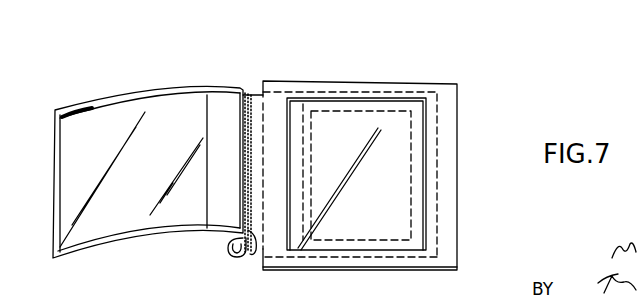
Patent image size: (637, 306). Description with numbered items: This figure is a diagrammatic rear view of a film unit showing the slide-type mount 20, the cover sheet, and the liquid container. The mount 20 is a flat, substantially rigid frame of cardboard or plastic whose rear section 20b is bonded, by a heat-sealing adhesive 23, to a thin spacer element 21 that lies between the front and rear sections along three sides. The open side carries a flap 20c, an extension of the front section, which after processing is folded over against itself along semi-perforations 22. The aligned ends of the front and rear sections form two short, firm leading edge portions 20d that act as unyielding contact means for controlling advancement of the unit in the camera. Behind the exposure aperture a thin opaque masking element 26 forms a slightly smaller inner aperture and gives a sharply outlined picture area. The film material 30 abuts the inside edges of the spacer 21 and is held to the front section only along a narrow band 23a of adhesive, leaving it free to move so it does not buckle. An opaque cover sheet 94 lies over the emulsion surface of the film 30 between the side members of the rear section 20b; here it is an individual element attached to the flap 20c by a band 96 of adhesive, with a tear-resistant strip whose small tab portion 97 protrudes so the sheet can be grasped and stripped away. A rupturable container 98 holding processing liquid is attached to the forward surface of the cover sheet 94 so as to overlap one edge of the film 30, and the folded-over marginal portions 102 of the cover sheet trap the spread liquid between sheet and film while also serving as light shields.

The mount 20 is at (466, 103).
The rear section 20b is at (393, 87).
The flap 20c is at (257, 103).
The leading edge portions 20d is at (262, 266).
The spacer element 21 is at (338, 92).
The semi-perforations 22 is at (270, 124).
The heat-sealing adhesive 23 is at (279, 219).
The band of adhesive 23a is at (292, 150).
The masking element 26 is at (412, 157).
The film material 30 is at (390, 187).
The cover sheet 94 is at (164, 165).
The band of adhesive 96 is at (252, 250).
The tab portion 97 is at (228, 252).
The container 98 is at (231, 100).
The folded-over marginal portions 102 is at (42, 130).